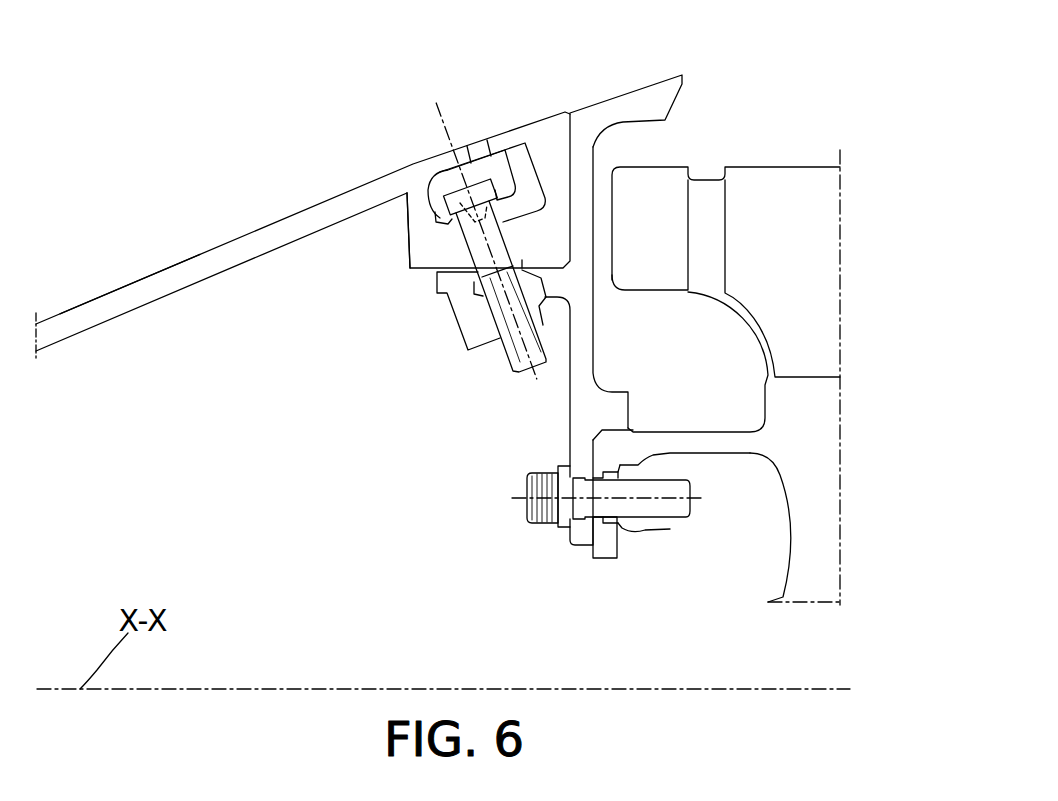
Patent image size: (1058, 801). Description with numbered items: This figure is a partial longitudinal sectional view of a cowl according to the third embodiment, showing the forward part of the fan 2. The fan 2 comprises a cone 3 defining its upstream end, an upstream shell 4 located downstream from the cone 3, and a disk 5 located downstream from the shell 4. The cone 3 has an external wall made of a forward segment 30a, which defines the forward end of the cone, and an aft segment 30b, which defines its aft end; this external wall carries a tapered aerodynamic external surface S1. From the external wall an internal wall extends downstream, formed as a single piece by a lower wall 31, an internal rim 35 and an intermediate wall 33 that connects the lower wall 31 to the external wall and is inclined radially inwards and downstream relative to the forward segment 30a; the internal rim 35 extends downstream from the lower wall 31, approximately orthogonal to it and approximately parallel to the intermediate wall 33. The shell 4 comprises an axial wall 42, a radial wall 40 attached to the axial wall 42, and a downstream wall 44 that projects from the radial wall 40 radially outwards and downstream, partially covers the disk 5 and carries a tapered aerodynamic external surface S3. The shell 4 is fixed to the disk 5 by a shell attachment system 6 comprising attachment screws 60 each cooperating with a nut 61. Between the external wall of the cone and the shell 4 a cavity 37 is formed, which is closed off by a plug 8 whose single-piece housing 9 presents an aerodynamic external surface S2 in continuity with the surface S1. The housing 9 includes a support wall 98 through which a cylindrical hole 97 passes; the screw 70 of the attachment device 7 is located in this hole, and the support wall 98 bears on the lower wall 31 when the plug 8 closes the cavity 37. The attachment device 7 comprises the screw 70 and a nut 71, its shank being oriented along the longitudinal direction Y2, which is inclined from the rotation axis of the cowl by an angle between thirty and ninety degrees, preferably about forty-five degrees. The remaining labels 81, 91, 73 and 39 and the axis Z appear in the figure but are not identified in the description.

The fan 2 is at (168, 156).
The cone 3 is at (157, 270).
The forward segment 30a is at (115, 300).
The aft segment 30b is at (553, 125).
The plug 8 is at (427, 157).
The clamp portion 81 is at (413, 168).
The housing 9 is at (417, 182).
The clip lip 91 is at (443, 162).
The cavity 37 is at (490, 168).
The downstream wall 44 is at (668, 97).
The internal rim 35 is at (540, 182).
The lower wall 31 is at (565, 233).
The axial wall 42 is at (547, 282).
The radial wall 40 is at (583, 416).
The intermediate wall 33 is at (445, 230).
The bolt portion 73 is at (413, 238).
The attachment device 7 is at (462, 443).
The nut 71 is at (490, 330).
The screw 70 is at (520, 347).
The support wall 98 is at (452, 247).
The cylindrical hole 97 is at (475, 250).
The nut 39 is at (457, 292).
The shell attachment system 6 is at (708, 578).
The attachment screw 60 is at (680, 505).
The nut 61 is at (632, 525).
The upstream shell 4 is at (580, 533).
The disk 5 is at (797, 440).
The aerodynamic external surface S1 is at (186, 260).
The aerodynamic external surface S2 is at (483, 143).
The tapered aerodynamic external surface S3 is at (652, 77).
The longitudinal direction Y2 is at (484, 247).
The axis Z is at (610, 498).